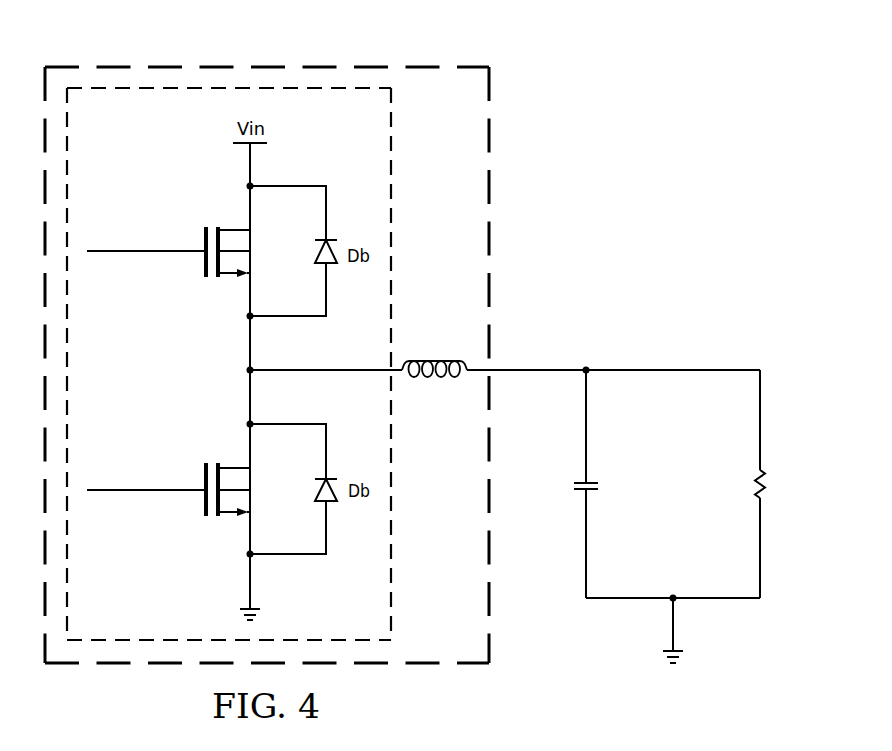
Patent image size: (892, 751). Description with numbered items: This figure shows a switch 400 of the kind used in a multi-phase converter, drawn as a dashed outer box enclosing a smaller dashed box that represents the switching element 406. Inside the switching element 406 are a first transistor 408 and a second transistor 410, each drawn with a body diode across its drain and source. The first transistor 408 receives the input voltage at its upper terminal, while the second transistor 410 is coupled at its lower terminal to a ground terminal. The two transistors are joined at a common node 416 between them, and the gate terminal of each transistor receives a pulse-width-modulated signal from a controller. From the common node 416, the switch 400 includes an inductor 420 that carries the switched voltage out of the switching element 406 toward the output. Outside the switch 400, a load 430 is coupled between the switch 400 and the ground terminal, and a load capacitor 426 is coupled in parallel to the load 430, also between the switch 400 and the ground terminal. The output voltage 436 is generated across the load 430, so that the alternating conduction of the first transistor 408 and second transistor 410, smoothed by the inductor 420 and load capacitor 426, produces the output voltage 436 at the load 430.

The switch 400 is at (160, 61).
The switching element 406 is at (395, 195).
The first transistor M1 408 is at (205, 240).
The second transistor M2 410 is at (205, 478).
The common node 416 is at (249, 370).
The inductor L 420 is at (440, 378).
The load capacitor Co 426 is at (600, 484).
The load Ro 430 is at (767, 486).
The output voltage Vo 436 is at (673, 372).